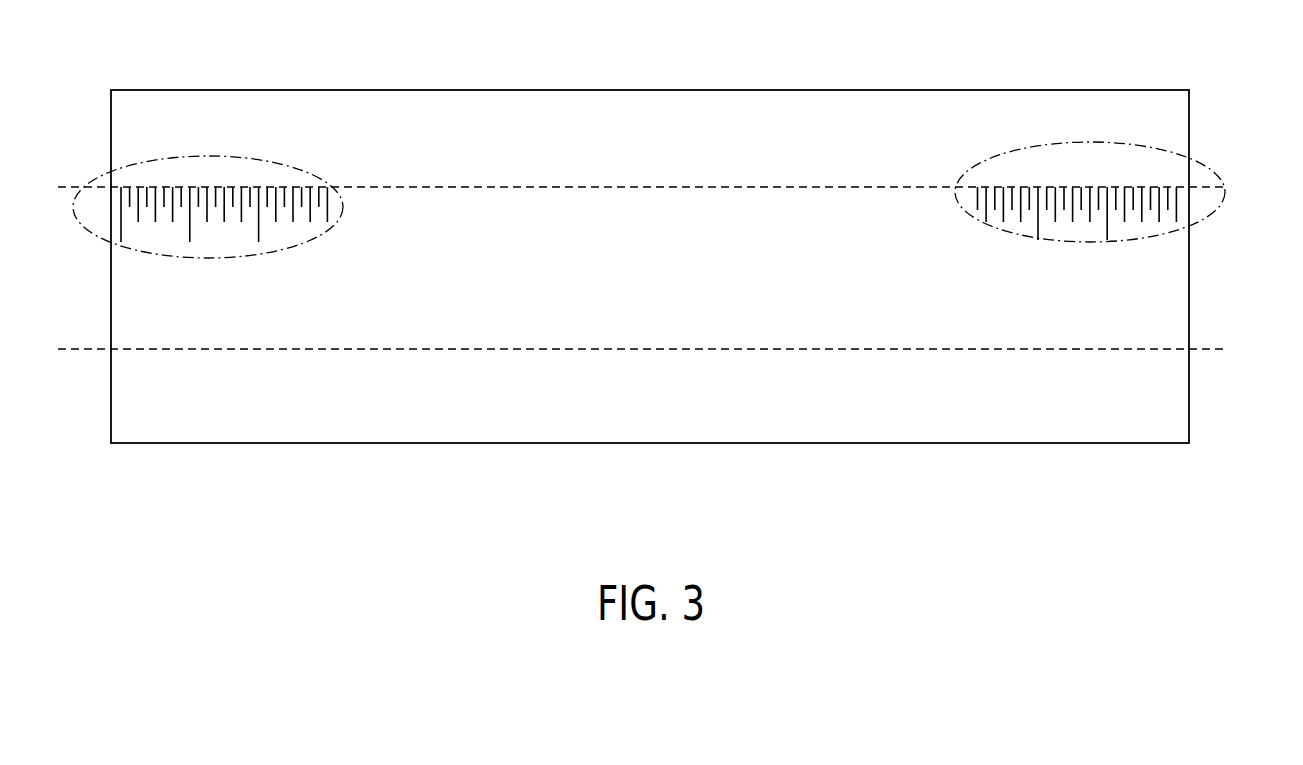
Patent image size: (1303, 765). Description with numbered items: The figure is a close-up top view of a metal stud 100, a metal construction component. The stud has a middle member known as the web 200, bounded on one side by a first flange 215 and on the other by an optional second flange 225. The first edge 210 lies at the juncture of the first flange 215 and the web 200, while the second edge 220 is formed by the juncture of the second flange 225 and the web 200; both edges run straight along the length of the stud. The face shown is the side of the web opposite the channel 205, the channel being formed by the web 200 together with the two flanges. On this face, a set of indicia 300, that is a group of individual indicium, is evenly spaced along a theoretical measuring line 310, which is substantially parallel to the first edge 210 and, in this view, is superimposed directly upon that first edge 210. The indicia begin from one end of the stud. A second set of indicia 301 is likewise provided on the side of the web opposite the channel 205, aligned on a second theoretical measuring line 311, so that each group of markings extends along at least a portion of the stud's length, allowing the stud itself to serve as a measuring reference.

The metal stud 100 is at (240, 522).
The web 200 is at (670, 225).
The side of the web opposite the channel 205 is at (888, 218).
The first edge 210 is at (1232, 172).
The first flange 215 is at (1185, 105).
The second edge 220 is at (1232, 330).
The second flange 225 is at (1185, 410).
The indicia 300 is at (262, 140).
The second set of indicia 301 is at (1075, 258).
The theoretical measuring line 310 is at (178, 150).
The second theoretical measuring line 311 is at (1088, 150).